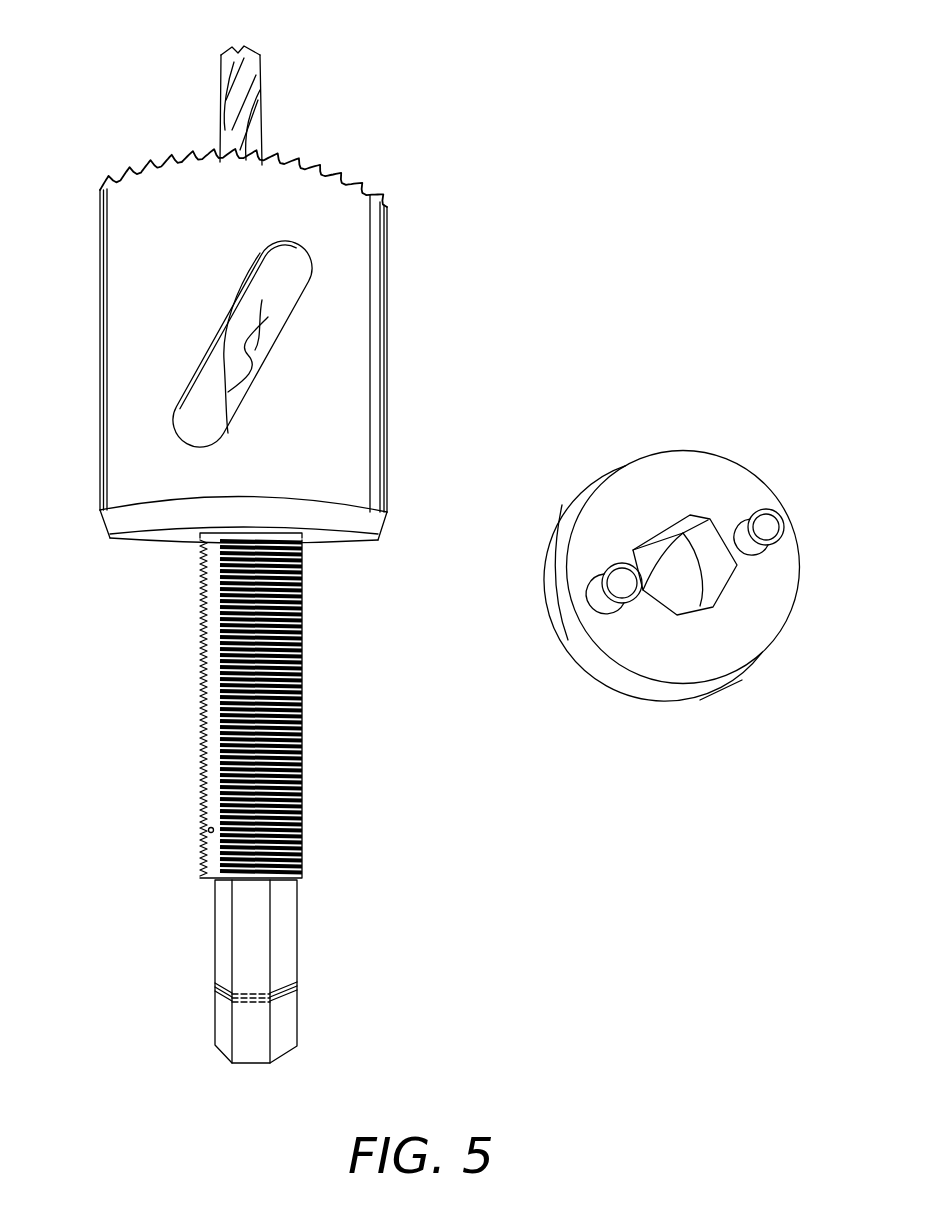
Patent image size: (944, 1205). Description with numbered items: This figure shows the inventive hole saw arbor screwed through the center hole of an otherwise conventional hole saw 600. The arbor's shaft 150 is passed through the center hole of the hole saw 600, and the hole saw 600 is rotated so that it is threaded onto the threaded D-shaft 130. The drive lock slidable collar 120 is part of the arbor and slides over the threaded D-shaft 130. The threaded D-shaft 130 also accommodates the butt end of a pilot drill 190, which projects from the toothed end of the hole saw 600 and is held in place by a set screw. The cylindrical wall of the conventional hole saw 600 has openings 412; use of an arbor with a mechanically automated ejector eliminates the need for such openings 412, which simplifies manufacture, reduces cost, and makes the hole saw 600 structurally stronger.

The drive lock slidable collar 120 is at (800, 597).
The threaded D-shaft 130 is at (303, 695).
The shaft 150 is at (297, 960).
The pilot drill 190 is at (252, 108).
The openings 412 is at (208, 332).
The hole saw 600 is at (387, 362).